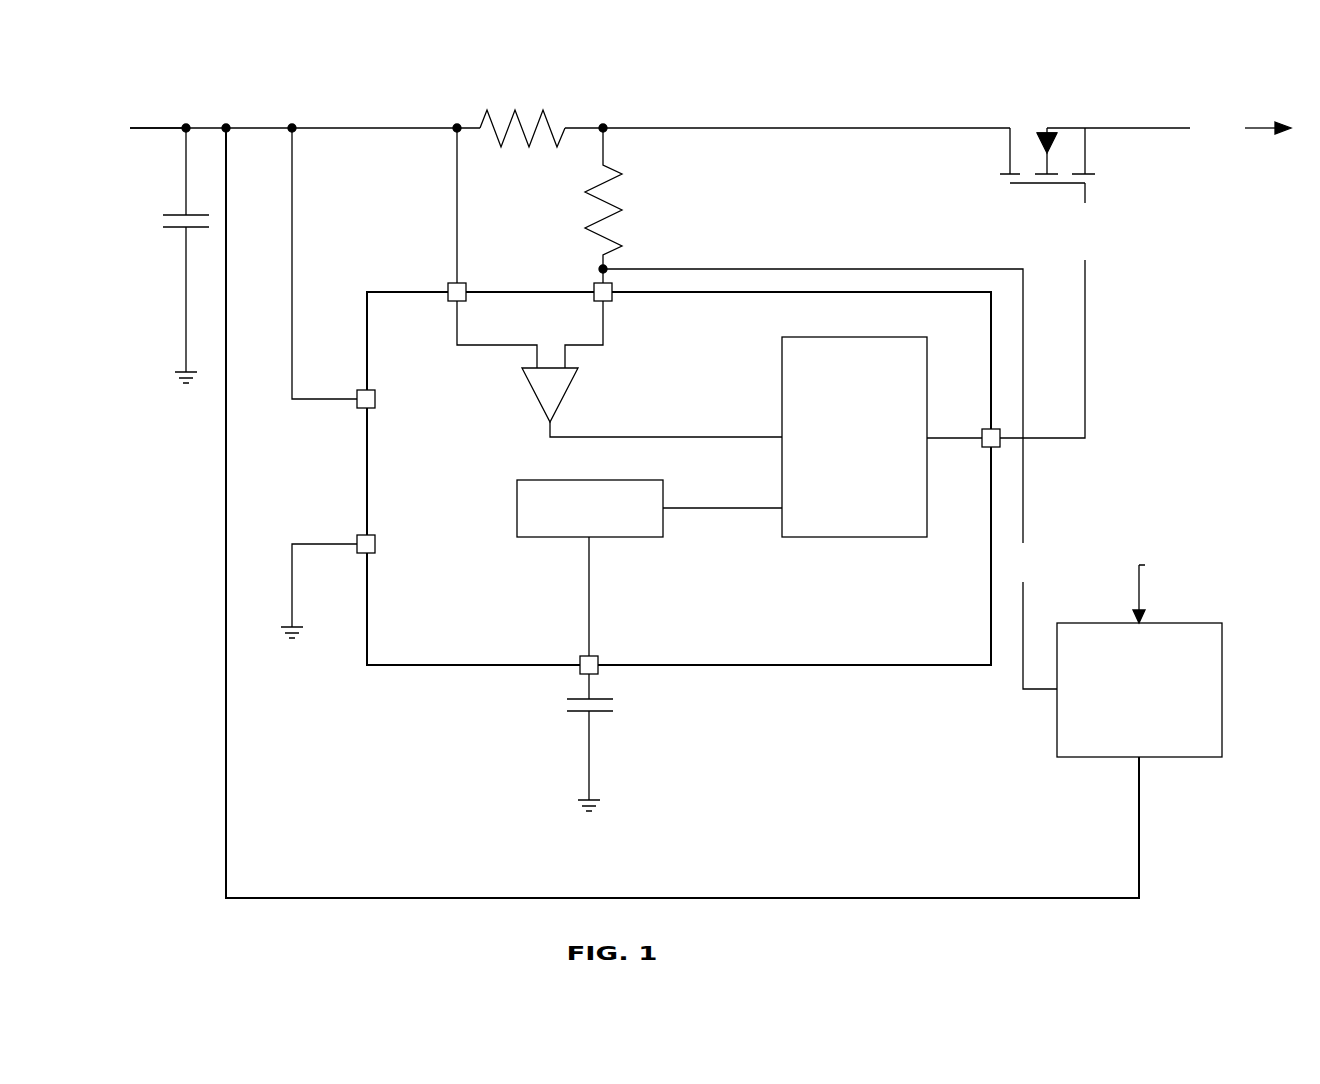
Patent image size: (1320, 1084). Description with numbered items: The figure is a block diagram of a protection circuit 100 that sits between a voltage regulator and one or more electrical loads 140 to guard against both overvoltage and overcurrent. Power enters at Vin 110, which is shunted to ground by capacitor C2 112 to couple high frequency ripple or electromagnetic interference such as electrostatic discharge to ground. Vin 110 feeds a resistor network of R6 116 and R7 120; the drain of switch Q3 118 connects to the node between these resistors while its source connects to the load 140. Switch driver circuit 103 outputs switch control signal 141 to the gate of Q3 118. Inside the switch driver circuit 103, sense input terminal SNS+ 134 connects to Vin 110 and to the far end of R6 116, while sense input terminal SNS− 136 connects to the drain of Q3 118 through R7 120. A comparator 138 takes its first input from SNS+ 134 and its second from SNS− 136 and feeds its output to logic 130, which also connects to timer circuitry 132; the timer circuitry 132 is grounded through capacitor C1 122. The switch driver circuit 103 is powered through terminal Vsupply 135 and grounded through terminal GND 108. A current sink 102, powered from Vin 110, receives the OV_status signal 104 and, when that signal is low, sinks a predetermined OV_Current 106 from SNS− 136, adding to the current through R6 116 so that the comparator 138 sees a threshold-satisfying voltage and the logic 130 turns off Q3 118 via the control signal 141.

The circuit 100 is at (386, 82).
The current sink 102 is at (1124, 726).
The switch driver circuit 103 is at (821, 639).
The OV_status signal 104 is at (1275, 565).
The OV_Current signal 106 is at (1051, 594).
The ground terminal GND 108 is at (388, 569).
The Vin 110 is at (171, 112).
The capacitor C2 112 is at (113, 251).
The resistor R6 116 is at (508, 107).
The switch Q3 118 is at (1032, 111).
The resistor R7 120 is at (635, 237).
The capacitor C1 122 is at (630, 734).
The logic 130 is at (839, 462).
The timer circuitry 132 is at (575, 531).
The sense input terminal SNS+ 134 is at (411, 287).
The power supply terminal Vsupply 135 is at (412, 424).
The sense input terminal SNS− 136 is at (627, 352).
The comparator 138 is at (638, 426).
The electrical load 140 is at (1204, 154).
The switch control signal 141 is at (1071, 256).